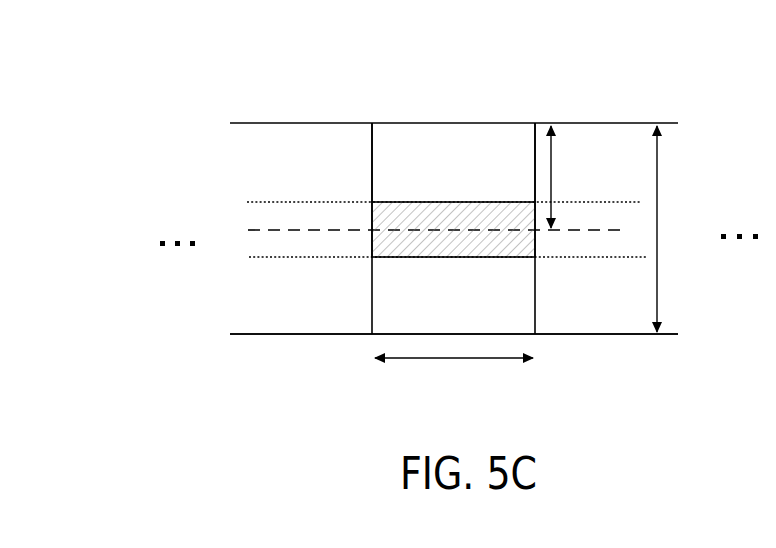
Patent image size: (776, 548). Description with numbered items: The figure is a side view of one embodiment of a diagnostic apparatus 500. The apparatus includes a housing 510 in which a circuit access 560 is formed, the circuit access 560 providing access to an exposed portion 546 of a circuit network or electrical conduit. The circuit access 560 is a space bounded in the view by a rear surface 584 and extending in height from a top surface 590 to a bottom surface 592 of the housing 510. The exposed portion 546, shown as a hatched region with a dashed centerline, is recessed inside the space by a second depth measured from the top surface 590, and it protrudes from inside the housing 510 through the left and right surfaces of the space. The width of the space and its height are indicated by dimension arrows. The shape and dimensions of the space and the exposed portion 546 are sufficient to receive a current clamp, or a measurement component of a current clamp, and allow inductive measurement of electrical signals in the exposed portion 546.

The diagnostic apparatus 500 is at (190, 42).
The housing 510 is at (273, 323).
The exposed portion 546 is at (458, 218).
The circuit access 560 is at (468, 92).
The rear surface 584 is at (432, 145).
The top surface 590 is at (617, 122).
The bottom surface 592 is at (300, 336).